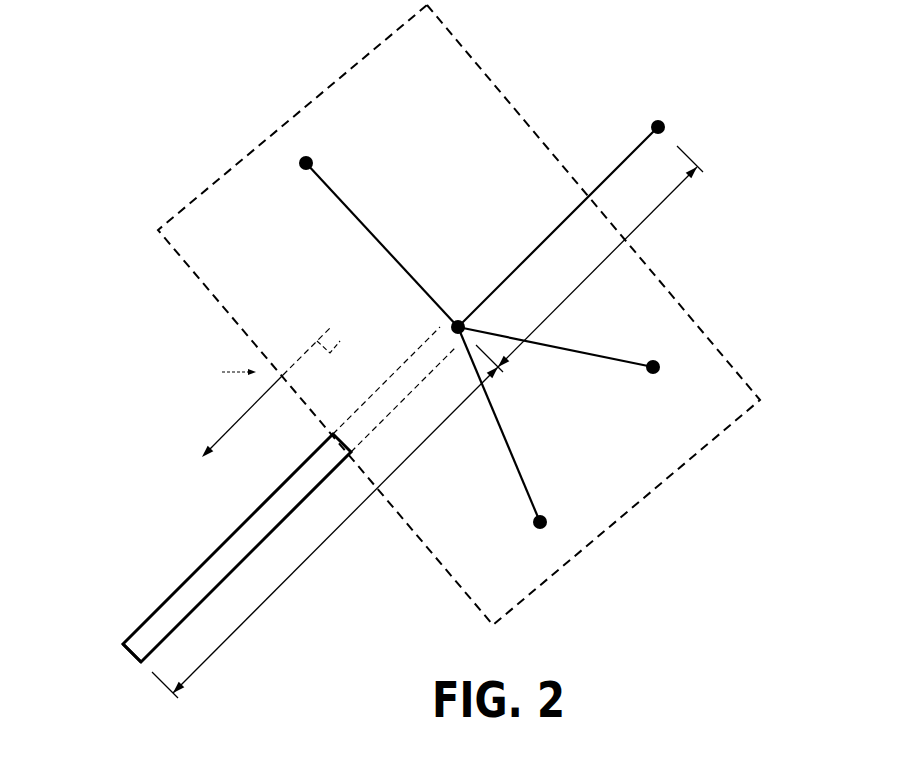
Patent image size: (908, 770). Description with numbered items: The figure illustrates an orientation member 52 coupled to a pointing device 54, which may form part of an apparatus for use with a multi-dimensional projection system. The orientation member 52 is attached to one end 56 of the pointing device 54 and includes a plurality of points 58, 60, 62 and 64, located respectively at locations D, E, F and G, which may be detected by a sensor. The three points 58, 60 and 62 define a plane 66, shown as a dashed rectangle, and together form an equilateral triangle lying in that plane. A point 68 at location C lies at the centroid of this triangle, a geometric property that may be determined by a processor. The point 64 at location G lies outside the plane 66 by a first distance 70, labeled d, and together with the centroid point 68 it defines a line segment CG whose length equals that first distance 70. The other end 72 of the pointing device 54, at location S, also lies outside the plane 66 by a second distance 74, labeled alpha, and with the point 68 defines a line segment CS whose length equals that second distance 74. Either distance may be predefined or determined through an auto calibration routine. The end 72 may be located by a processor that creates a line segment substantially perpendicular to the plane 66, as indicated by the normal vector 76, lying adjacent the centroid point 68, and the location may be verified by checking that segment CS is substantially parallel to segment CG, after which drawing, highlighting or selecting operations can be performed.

The orientation member 52 is at (408, 252).
The pointing device 54 is at (225, 540).
The end of pointing device 56 is at (433, 341).
The point 58 is at (314, 163).
The point 60 is at (544, 514).
The point 62 is at (653, 376).
The point 64 is at (666, 127).
The plane 66 is at (503, 92).
The point 68 is at (467, 325).
The distance d 70 is at (638, 228).
The other end of pointing device 72 is at (128, 653).
The distance α 74 is at (288, 578).
The normal vector 76 is at (230, 427).